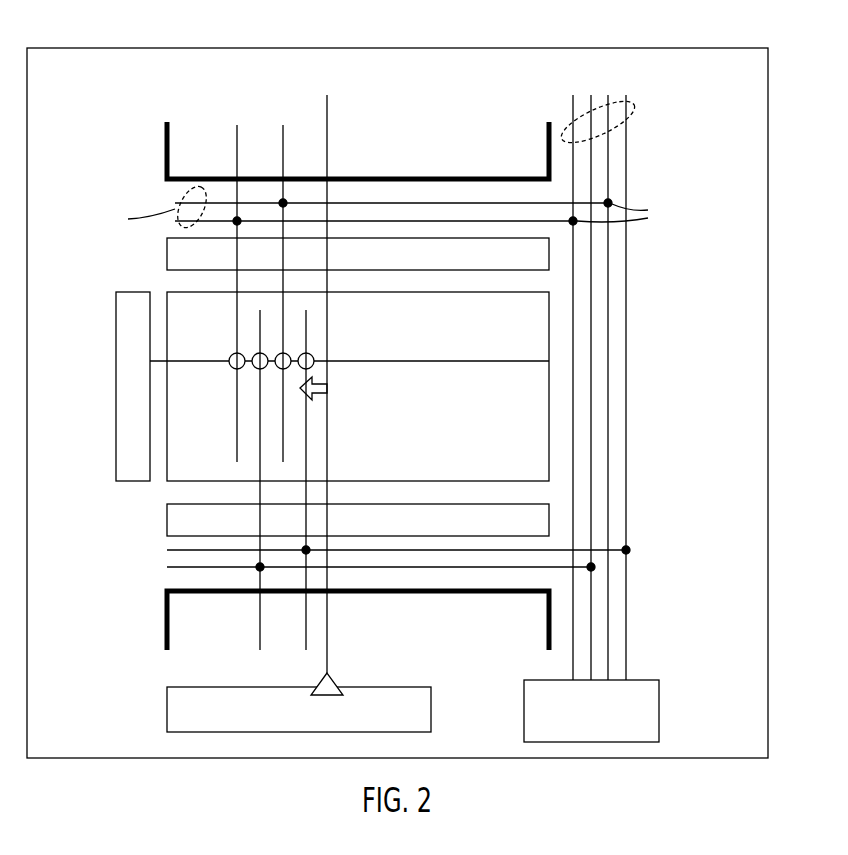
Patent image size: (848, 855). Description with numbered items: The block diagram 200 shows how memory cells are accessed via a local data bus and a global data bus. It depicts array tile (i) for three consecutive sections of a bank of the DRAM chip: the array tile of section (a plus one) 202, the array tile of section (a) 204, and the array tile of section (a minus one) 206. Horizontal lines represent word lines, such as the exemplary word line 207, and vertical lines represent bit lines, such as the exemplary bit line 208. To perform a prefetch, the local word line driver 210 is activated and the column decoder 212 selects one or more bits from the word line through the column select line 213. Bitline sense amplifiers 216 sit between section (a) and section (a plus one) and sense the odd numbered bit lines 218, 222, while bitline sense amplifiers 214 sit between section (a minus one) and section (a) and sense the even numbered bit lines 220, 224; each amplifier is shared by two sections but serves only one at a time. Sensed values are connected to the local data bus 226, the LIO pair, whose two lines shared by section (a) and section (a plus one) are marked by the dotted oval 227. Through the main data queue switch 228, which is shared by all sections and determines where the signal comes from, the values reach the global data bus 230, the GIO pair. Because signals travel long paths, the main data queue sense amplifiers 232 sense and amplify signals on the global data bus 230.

The block diagram 200 is at (65, 48).
The array tile (i) of section (a+1) 202 is at (460, 120).
The array tile (i) of section (a) 204 is at (465, 397).
The array tile (i) of section (a-1) 206 is at (467, 657).
The word line 207 is at (194, 365).
The bit line 208 is at (627, 283).
The local word line driver 210 is at (116, 387).
The column decoder 212 is at (358, 684).
The column select line 213 is at (328, 455).
The bitline sense amplifiers 214 is at (456, 520).
The bitline sense amplifiers 216 is at (456, 253).
The odd numbered bit line 218 is at (234, 312).
The even numbered bit line 220 is at (258, 472).
The odd numbered bit line 222 is at (284, 420).
The even numbered bit line 224 is at (307, 335).
The local data bus 226 is at (103, 192).
The dotted oval 227 is at (178, 222).
The main data queue switch 228 is at (675, 188).
The main data queue 230 is at (675, 118).
The main data queue sense amplifiers 232 is at (660, 712).